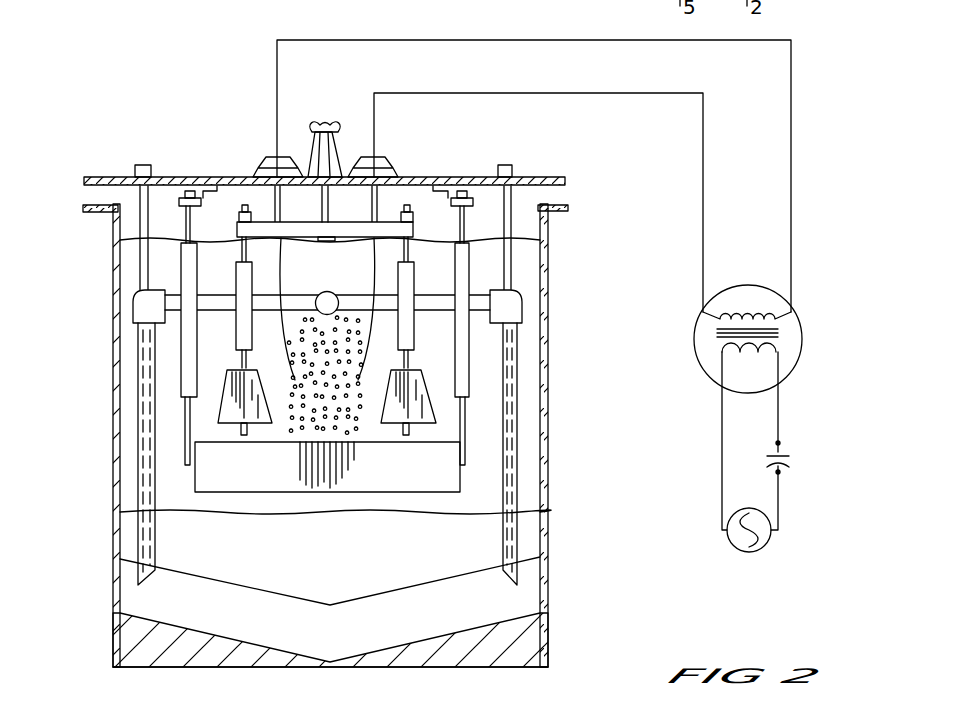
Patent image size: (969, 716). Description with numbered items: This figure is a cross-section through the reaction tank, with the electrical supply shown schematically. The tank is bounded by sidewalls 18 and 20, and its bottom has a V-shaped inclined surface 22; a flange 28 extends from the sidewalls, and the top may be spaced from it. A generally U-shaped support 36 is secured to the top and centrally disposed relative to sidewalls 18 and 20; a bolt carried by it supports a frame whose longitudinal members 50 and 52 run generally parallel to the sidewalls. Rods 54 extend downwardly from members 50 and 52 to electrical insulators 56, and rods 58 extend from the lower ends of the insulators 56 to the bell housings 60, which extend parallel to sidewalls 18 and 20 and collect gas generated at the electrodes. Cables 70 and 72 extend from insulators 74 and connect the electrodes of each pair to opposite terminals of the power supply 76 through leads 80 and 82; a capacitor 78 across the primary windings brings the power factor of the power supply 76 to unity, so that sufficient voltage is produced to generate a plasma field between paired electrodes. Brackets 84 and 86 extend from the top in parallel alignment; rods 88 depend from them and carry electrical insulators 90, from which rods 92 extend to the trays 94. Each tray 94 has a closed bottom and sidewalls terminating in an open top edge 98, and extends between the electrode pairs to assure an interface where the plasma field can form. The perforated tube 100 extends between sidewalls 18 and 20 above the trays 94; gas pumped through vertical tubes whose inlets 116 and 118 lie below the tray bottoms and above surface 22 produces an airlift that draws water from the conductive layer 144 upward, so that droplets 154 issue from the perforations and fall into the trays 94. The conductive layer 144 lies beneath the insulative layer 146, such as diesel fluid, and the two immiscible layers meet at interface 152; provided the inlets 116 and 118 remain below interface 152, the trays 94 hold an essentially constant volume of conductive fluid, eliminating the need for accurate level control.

The sidewall 18 is at (113, 411).
The sidewall 20 is at (548, 453).
The V-shaped inclined surface 22 is at (388, 600).
The flange 28 is at (84, 209).
The support 36 is at (338, 130).
The longitudinal member 50 is at (240, 224).
The longitudinal member 52 is at (418, 228).
The rod 54 is at (240, 251).
The electrical insulator 56 is at (252, 296).
The rod 58 is at (242, 360).
The bell housing 60 is at (256, 393).
The cable 70 is at (333, 268).
The cable 72 is at (368, 258).
The insulator 74 is at (263, 158).
The power supply 76 is at (800, 358).
The capacitor 78 is at (792, 458).
The lead 80 is at (602, 93).
The lead 82 is at (528, 40).
The bracket 84 is at (204, 176).
The bracket 86 is at (446, 185).
The rod 88 is at (186, 234).
The electrical insulator 90 is at (198, 292).
The rod 92 is at (186, 430).
The tray 94 is at (243, 475).
The open top edge 98 is at (348, 444).
The perforated tube 100 is at (290, 268).
The tapered inlet opening 116 is at (150, 582).
The inlet 118 is at (506, 385).
The conductive layer 144 is at (528, 528).
The insulative layer 146 is at (525, 280).
The interface 152 is at (340, 516).
The droplets 154 is at (352, 360).